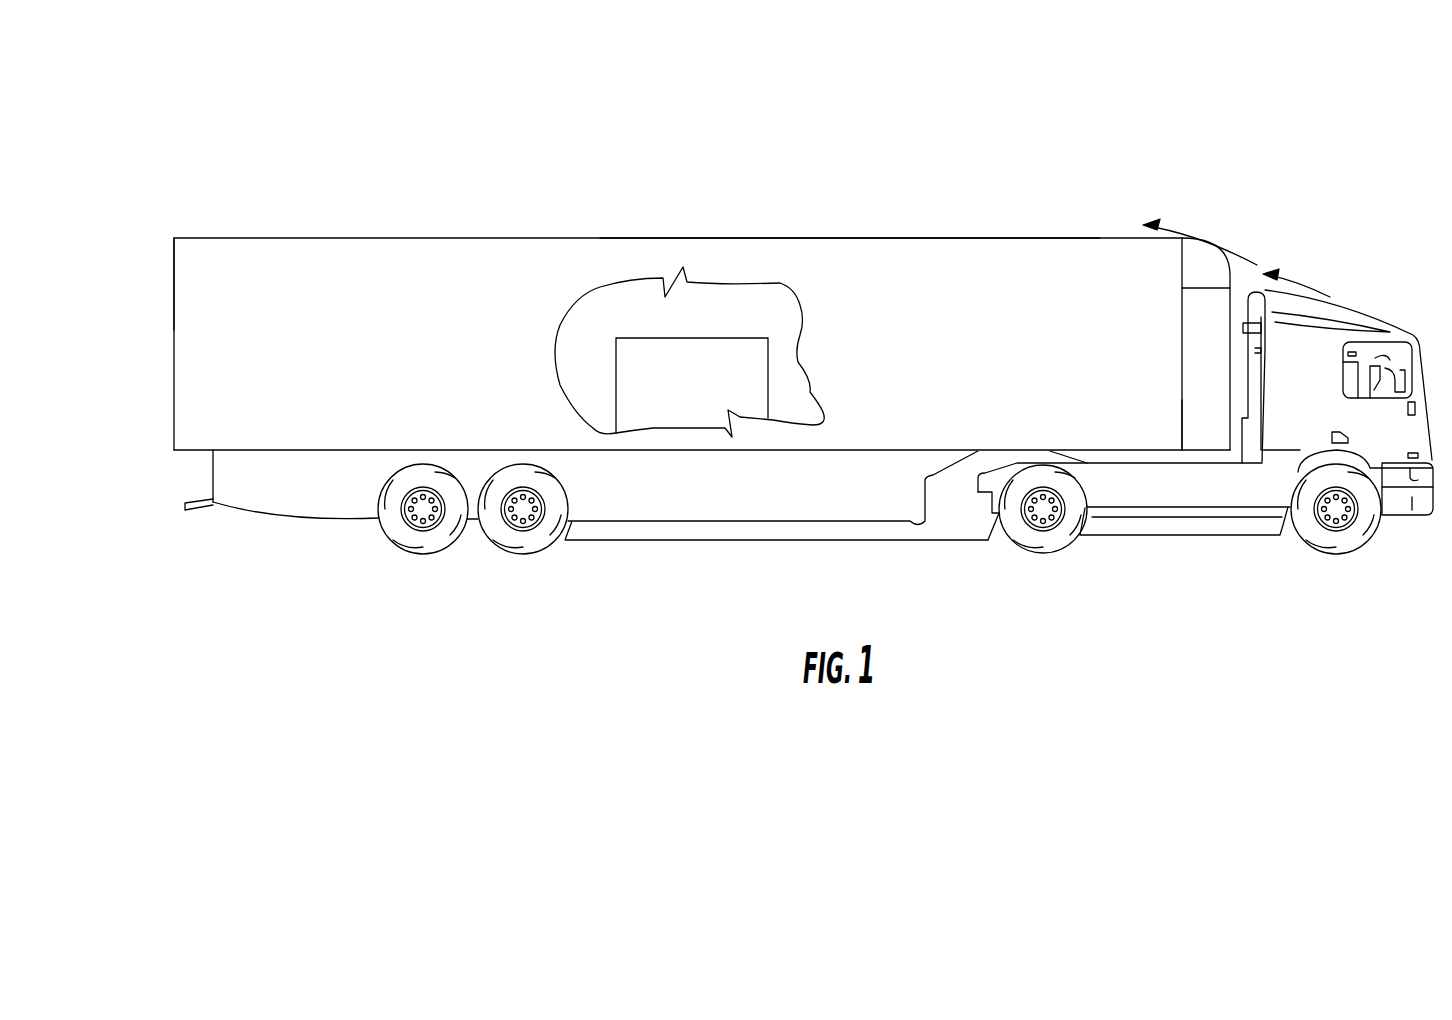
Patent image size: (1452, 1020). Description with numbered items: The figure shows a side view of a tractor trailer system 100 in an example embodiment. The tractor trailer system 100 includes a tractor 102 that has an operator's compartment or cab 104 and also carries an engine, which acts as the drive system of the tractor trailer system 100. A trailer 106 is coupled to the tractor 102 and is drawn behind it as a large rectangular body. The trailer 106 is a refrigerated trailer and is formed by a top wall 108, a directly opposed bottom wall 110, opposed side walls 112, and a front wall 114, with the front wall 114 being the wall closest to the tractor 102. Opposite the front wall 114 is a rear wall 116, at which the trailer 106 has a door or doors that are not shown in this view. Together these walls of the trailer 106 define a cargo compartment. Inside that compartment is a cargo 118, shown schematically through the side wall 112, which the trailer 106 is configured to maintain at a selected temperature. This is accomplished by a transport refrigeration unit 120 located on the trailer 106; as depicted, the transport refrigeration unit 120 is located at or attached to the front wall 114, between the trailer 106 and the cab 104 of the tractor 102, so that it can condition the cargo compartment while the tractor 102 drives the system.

The tractor trailer system 100 is at (497, 126).
The tractor 102 is at (1403, 517).
The cab 104 is at (1383, 358).
The trailer 106 is at (353, 275).
The top wall 108 is at (833, 238).
The bottom wall 110 is at (650, 450).
The side walls 112 is at (770, 323).
The front wall 114 is at (1180, 362).
The rear wall 116 is at (174, 268).
The cargo 118 is at (710, 402).
The transport refrigeration unit 120 is at (1202, 422).